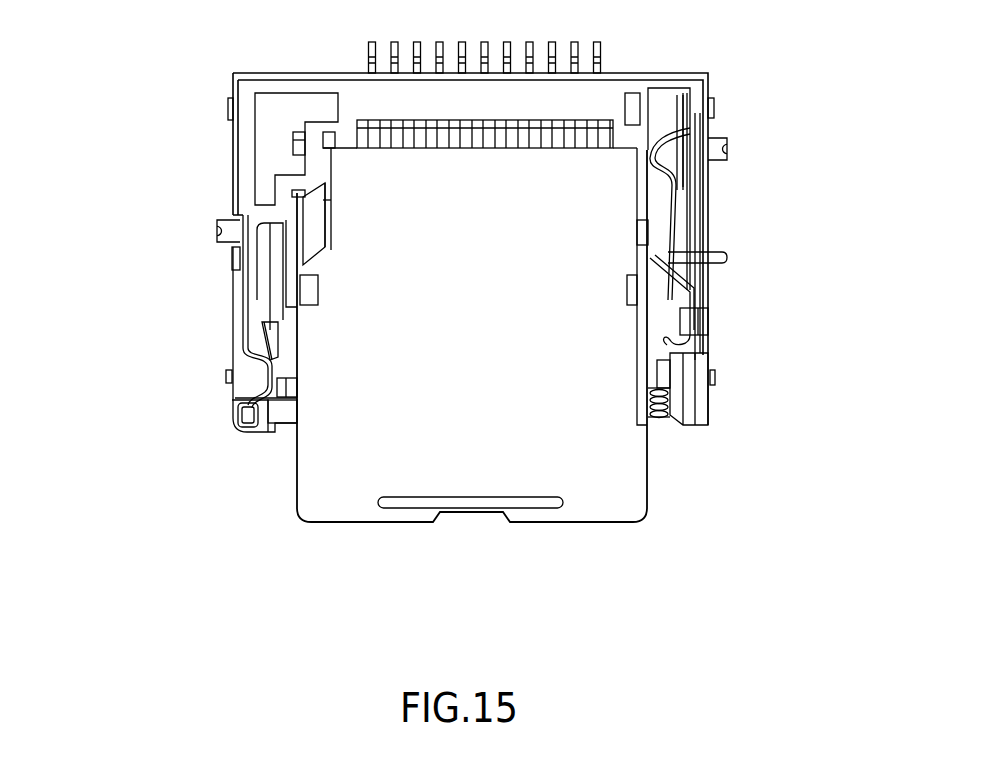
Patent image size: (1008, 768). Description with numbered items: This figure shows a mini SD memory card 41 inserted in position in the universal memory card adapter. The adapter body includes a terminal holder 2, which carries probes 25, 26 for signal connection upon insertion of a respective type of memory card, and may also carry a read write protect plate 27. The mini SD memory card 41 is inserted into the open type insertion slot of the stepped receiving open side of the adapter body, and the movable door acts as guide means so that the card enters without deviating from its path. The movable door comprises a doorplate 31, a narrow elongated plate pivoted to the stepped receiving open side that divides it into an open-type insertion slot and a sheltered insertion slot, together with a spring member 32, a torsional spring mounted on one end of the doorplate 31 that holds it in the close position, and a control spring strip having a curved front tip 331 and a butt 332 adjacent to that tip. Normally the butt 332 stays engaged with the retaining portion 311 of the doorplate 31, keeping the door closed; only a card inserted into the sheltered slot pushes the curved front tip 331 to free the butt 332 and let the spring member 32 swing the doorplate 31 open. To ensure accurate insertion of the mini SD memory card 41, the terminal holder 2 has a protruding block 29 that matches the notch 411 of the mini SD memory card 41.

The terminal holder 2 is at (272, 116).
The protruding block 29 is at (327, 173).
The notch 411 is at (327, 200).
The read write protect plate 27 is at (257, 303).
The butt 332 is at (262, 375).
The retaining portion 311 is at (257, 393).
The curved front tip 331 is at (237, 428).
The doorplate 31 is at (292, 413).
The probe 25 is at (663, 157).
The probe 26 is at (683, 318).
The spring member 32 is at (662, 400).
The mini SD memory card 41 is at (632, 483).